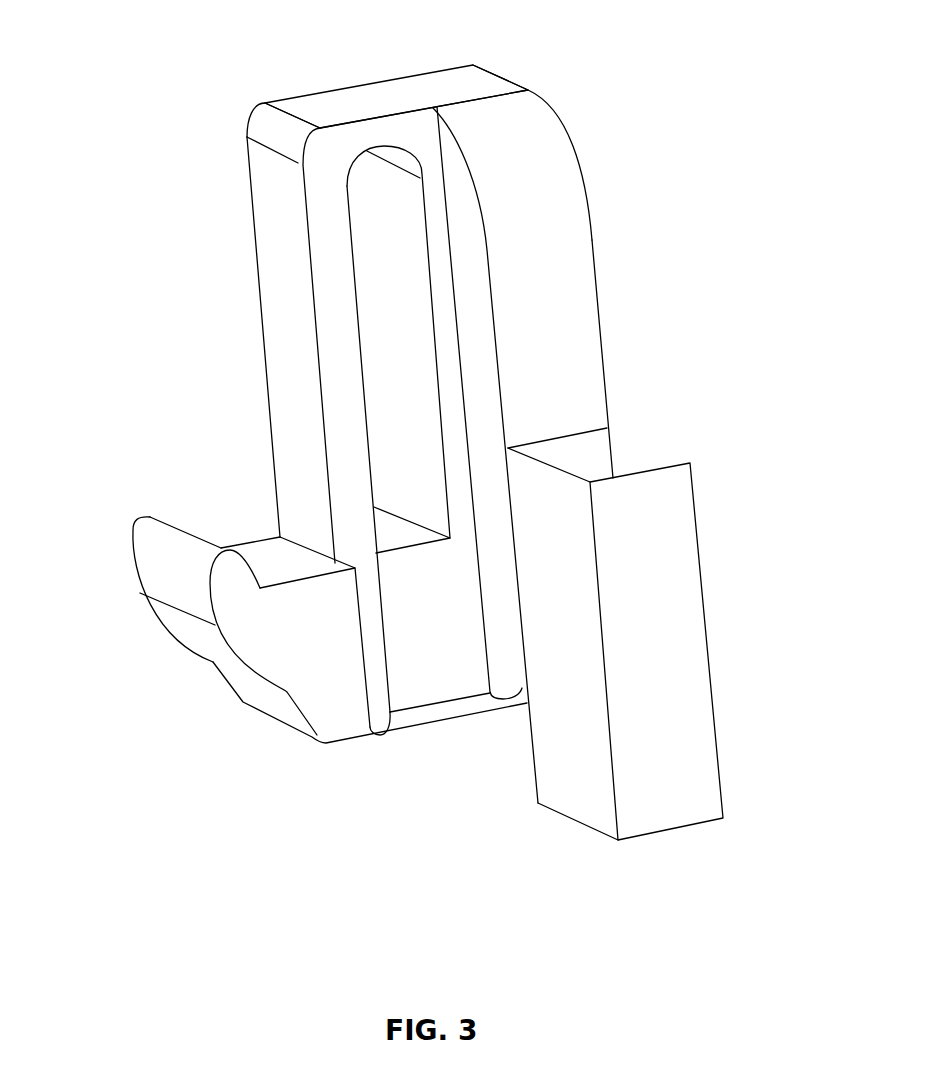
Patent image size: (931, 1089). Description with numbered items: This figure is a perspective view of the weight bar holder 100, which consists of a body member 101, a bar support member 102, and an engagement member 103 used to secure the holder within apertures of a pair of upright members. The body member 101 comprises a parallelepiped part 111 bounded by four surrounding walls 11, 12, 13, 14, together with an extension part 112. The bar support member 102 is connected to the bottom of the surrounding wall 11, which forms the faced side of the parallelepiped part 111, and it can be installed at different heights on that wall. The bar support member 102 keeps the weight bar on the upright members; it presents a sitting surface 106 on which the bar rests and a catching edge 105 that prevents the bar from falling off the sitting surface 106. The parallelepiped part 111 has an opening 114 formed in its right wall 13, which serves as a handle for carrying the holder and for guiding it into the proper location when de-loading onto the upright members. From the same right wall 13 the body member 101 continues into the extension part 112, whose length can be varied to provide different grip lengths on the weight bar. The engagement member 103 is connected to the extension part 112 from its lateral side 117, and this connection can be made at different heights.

The weight bar holder 100 is at (677, 108).
The surrounding wall 11 is at (273, 212).
The surrounding wall 12 is at (500, 72).
The surrounding wall 13 is at (340, 317).
The surrounding wall 14 is at (332, 93).
The body member 101 is at (272, 127).
The bar support member 102 is at (328, 682).
The engagement member 103 is at (675, 523).
The catching edge 105 is at (157, 557).
The sitting surface 106 is at (262, 558).
The parallelepiped part 111 is at (427, 86).
The extension part 112 is at (553, 130).
The opening 114 is at (380, 392).
The lateral side 117 is at (572, 318).